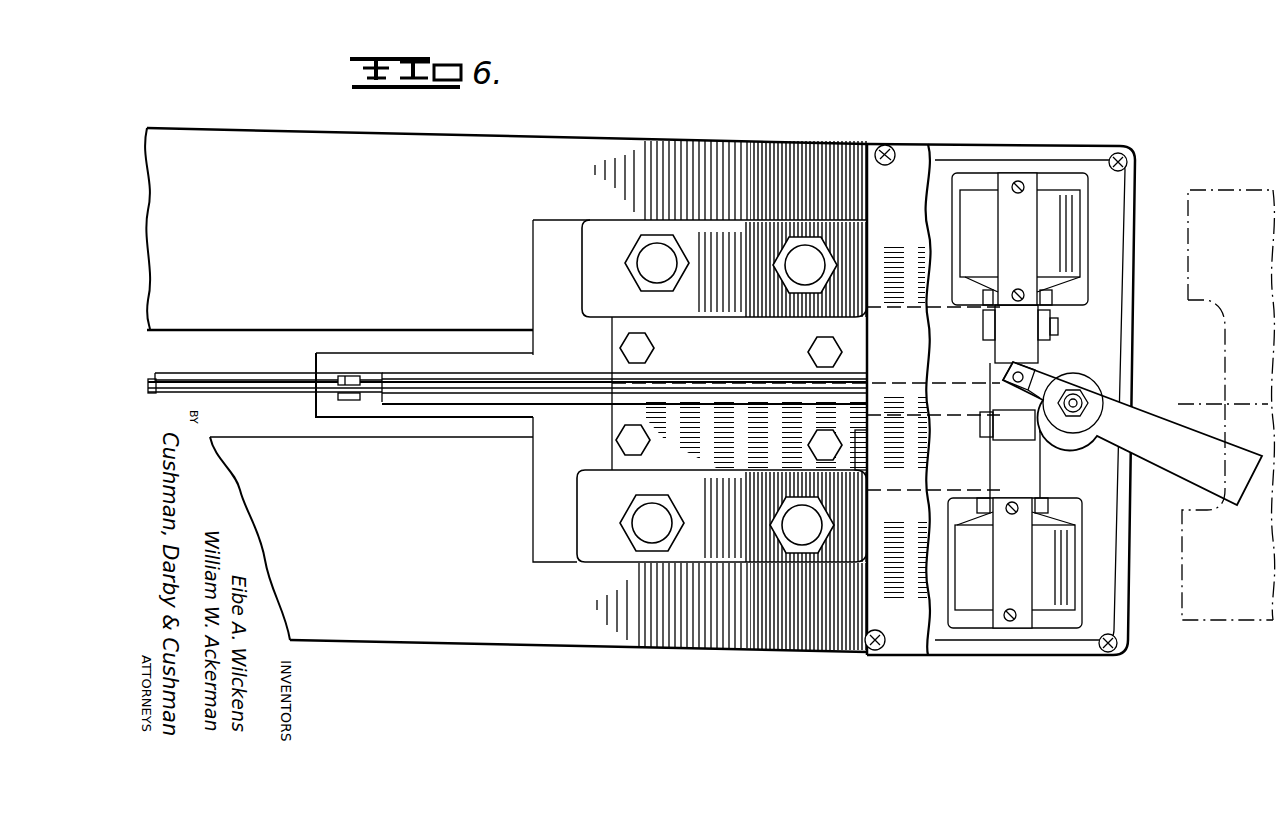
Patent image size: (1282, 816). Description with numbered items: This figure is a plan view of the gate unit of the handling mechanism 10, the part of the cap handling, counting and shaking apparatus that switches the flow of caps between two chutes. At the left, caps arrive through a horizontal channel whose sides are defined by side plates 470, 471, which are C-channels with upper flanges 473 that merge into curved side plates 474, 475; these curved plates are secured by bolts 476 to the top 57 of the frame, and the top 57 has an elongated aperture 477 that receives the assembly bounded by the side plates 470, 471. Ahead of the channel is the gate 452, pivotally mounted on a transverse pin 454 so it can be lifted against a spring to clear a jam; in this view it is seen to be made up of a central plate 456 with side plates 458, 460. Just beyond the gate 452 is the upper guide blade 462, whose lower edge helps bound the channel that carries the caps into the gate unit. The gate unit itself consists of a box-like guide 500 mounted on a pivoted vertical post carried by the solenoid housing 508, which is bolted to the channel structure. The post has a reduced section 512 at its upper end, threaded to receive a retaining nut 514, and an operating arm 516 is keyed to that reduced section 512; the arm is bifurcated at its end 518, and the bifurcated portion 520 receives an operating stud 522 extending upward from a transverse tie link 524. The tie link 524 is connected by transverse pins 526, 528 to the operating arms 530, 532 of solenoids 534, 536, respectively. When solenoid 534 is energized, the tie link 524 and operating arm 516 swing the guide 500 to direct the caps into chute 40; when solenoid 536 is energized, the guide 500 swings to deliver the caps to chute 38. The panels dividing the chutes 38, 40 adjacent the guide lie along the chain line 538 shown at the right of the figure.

The handling mechanism 10 is at (478, 134).
The top of frame 57 is at (356, 130).
The chute 38 is at (1200, 622).
The chute 40 is at (1205, 186).
The gate 452 is at (218, 379).
The transverse pin 454 is at (350, 377).
The central plate 456 is at (158, 376).
The side plate 458 is at (230, 394).
The side plate 460 is at (266, 375).
The upper guide blade 462 is at (420, 388).
The side plate 470 is at (425, 425).
The side plate 471 is at (418, 330).
The upper flange 473 is at (598, 318).
The curved side plate 474 is at (667, 563).
The curved side plate 475 is at (688, 223).
The bolts 476 is at (682, 266).
The elongated aperture 477 is at (302, 330).
The box-like guide 500 is at (1162, 478).
The solenoid housing 508 is at (912, 642).
The reduced section of post 512 is at (1085, 410).
The retaining nut 514 is at (1093, 432).
The operating arm 516 is at (1060, 378).
The end of operating arm 518 is at (1006, 367).
The bifurcated portion 520 is at (1040, 376).
The operating stud 522 is at (1010, 380).
The transverse tie link 524 is at (992, 392).
The transverse pin 526 is at (1047, 432).
The operating arm of solenoid 530 is at (1042, 470).
The operating arm of solenoid 532 is at (985, 308).
The transverse pin 528 is at (1058, 326).
The solenoid 534 is at (1062, 585).
The solenoid 536 is at (1065, 228).
The chain line 538 is at (1186, 398).